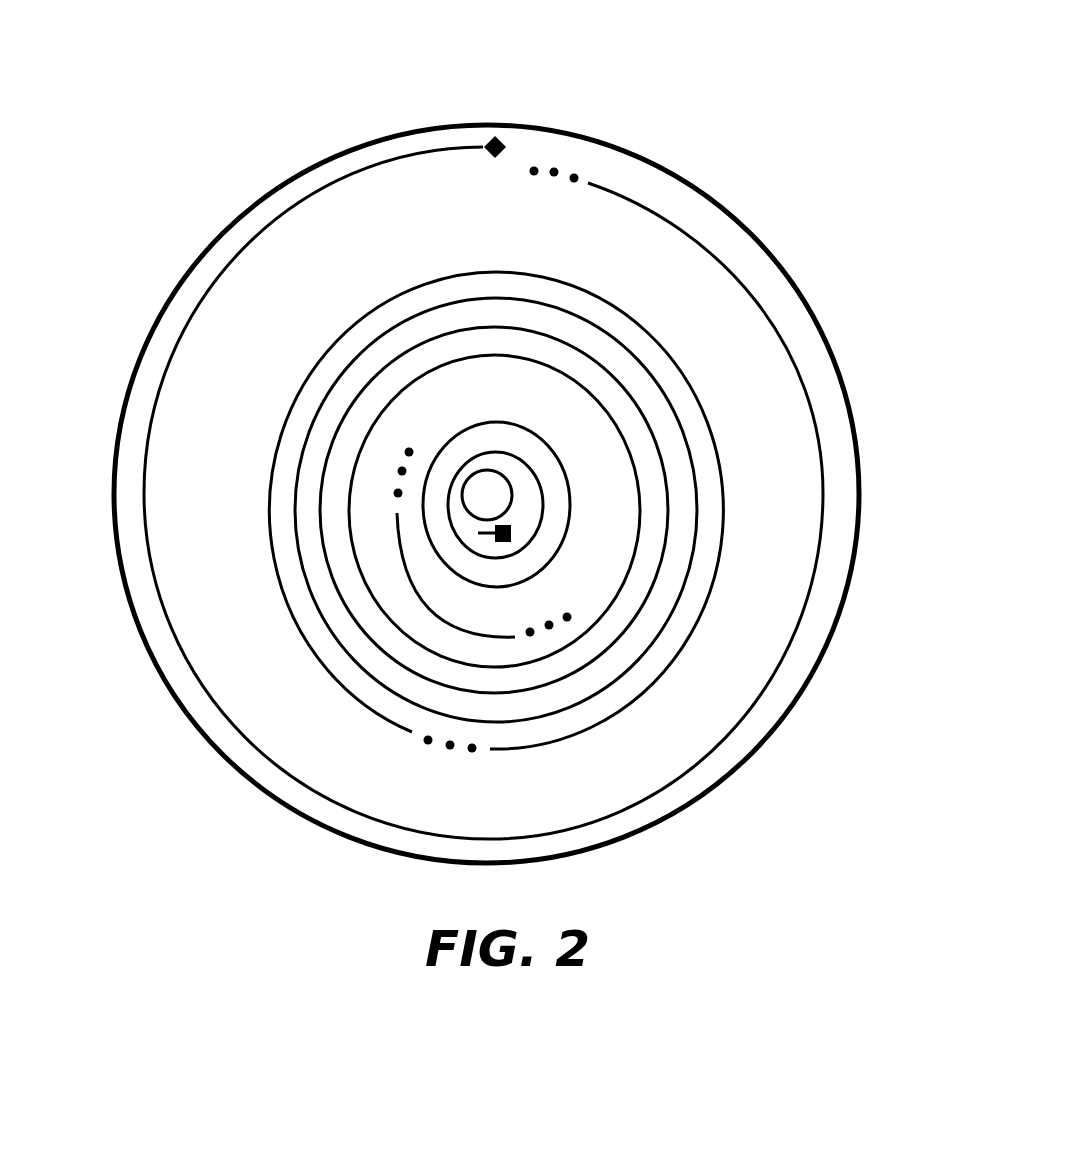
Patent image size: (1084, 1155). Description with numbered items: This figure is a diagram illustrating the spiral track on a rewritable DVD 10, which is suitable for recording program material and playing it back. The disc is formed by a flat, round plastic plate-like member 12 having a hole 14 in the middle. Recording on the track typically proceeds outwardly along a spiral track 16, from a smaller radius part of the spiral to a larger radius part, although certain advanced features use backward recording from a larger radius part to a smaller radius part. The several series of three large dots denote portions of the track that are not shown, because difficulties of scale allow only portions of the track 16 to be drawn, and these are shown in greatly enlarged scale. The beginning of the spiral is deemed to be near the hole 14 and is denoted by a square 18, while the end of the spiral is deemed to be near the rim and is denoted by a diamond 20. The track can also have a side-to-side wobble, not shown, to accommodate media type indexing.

The rewritable DVD 10 is at (531, 32).
The plate-like member 12 is at (578, 133).
The hole 14 is at (512, 497).
The spiral track 16 is at (550, 443).
The square 18 is at (512, 534).
The diamond 20 is at (490, 137).